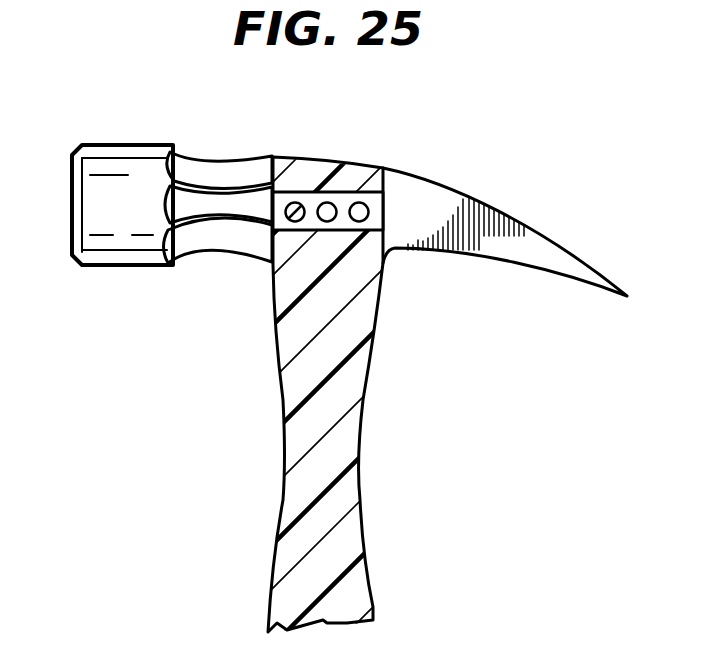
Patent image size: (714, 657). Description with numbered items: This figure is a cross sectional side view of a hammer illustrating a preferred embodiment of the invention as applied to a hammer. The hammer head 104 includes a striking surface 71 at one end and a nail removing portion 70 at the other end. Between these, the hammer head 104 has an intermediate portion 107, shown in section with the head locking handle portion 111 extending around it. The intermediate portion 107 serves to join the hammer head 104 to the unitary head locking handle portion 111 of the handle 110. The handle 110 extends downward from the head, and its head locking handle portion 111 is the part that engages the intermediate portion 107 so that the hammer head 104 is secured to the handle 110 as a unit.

The nail removing portion 70 is at (530, 242).
The striking surface 71 is at (72, 223).
The hammer head 104 is at (135, 150).
The intermediate portion 107 is at (343, 202).
The handle 110 is at (283, 518).
The head locking handle portion 111 is at (308, 170).